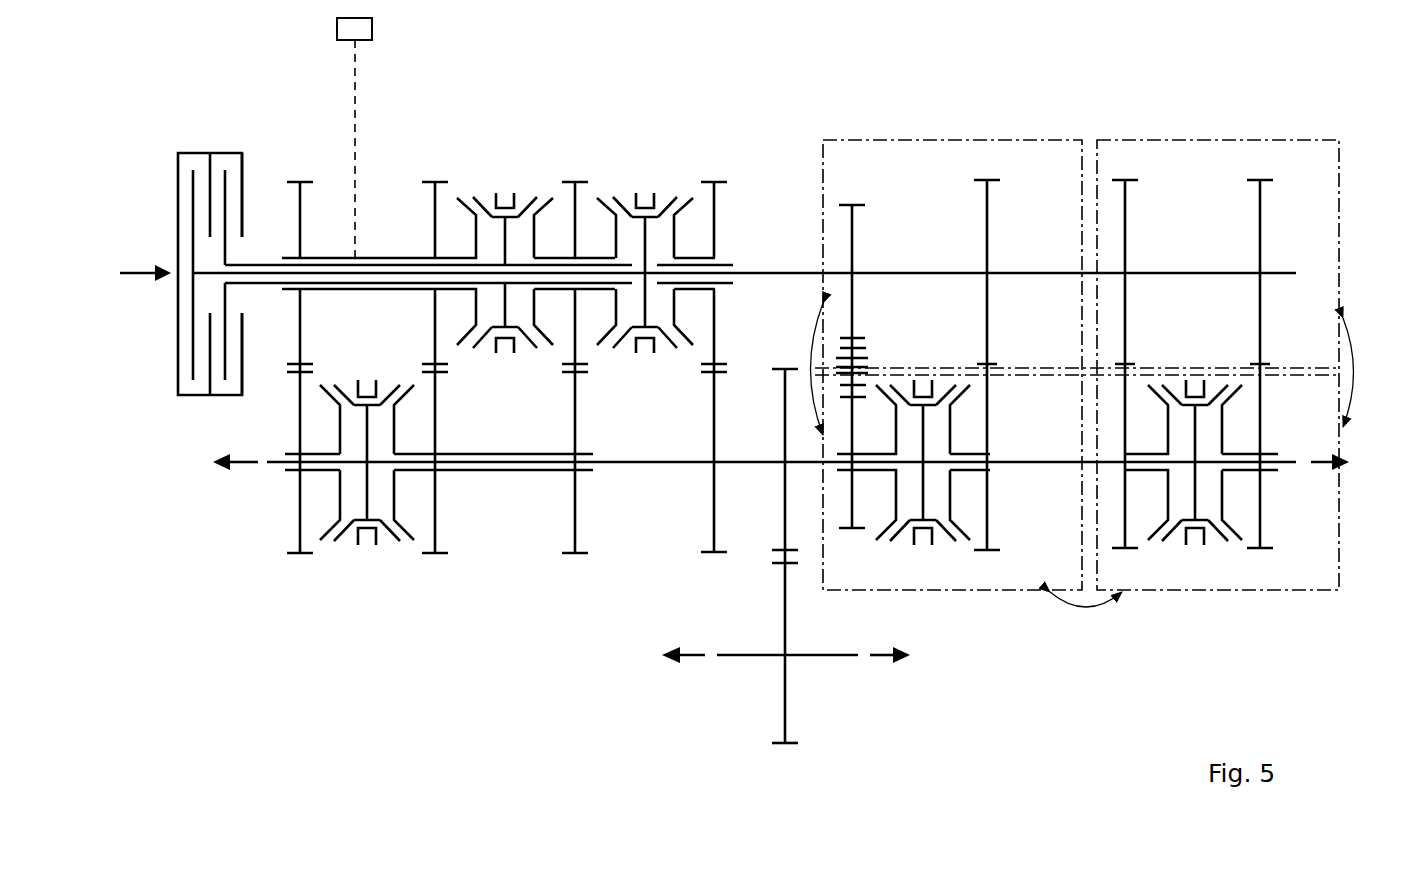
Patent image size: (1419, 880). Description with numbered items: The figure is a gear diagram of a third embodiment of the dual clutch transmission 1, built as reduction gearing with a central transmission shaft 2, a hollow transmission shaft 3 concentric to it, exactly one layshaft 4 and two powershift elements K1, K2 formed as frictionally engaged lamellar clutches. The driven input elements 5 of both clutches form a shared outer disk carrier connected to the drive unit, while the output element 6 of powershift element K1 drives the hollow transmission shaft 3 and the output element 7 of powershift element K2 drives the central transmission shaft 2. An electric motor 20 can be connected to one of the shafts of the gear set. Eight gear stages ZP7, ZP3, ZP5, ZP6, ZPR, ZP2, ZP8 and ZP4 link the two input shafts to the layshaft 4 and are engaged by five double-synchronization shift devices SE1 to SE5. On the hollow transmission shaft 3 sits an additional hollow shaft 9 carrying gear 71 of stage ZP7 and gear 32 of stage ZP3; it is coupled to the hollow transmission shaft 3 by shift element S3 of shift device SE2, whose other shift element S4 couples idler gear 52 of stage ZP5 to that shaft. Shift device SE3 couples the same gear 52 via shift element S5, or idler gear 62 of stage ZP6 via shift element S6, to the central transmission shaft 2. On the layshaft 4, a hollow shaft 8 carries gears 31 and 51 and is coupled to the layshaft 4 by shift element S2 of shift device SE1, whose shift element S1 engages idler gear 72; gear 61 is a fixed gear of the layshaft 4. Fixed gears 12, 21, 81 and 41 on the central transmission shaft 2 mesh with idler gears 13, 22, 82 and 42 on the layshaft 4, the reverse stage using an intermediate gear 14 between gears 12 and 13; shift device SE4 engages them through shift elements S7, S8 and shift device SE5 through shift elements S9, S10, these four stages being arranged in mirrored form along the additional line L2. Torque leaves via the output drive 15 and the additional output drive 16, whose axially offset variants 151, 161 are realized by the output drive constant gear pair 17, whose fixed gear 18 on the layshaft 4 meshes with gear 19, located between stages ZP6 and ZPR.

The dual clutch transmission 1 is at (160, 140).
The input elements of the powershift elements 5 is at (210, 152).
The output element of the powershift element K1 6 is at (225, 168).
The output element of the powershift element K2 7 is at (193, 168).
The powershift element K1 is at (237, 398).
The powershift element K2 is at (178, 400).
The hollow transmission shaft 3 is at (335, 265).
The additional hollow shaft 9 is at (383, 273).
The central transmission shaft 2 is at (915, 272).
The electric motor 20 is at (372, 30).
The gear stage ZP7 is at (300, 180).
The gear of the gear stage ZP7 71 is at (300, 220).
The additional gear of the gear stage ZP7 72 is at (297, 545).
The gear stage ZP3 is at (435, 180).
The additional gear of the gear stage ZP3 32 is at (433, 228).
The gear of the gear stage ZP3 31 is at (437, 520).
The gear stage ZP5 is at (575, 180).
The second gear of the gear stage ZP5 52 is at (577, 220).
The gear of the gear stage ZP5 51 is at (575, 520).
The gear stage ZP6 is at (712, 180).
The additional gear of the gear stage ZP6 62 is at (714, 220).
The gear of the gear stage ZP6 61 is at (713, 522).
The shift device SE2 is at (505, 185).
The shift element S3 is at (468, 200).
The shift element S4 is at (540, 200).
The shift device SE3 is at (645, 185).
The shift element S5 is at (613, 345).
The shift element S6 is at (680, 345).
The additional output drive 16 is at (240, 470).
The layshaft 4 is at (626, 462).
The hollow shaft 8 is at (512, 470).
The output drive 15 is at (1325, 467).
The shift device SE1 is at (367, 550).
The shift element S1 is at (333, 540).
The shift element S2 is at (400, 540).
The gear of the output drive constant gear pair 18 is at (785, 380).
The output drive constant gear pair 17 is at (767, 572).
The gear of the output drive constant gear pair 19 is at (780, 720).
The axially offset variant of the additional output drive 161 is at (700, 665).
The axially offset variant of the output drive 151 is at (880, 665).
The gear stage ZPR is at (852, 203).
The gear of the gear stage ZPR 12 is at (850, 232).
The intermediate gear 14 is at (860, 345).
The gear of the gear stage ZPR 13 is at (840, 530).
The gear stage ZP2 is at (987, 178).
The gear of the gear stage ZP2 21 is at (990, 200).
The gear of the gear stage ZP2 22 is at (995, 560).
The shift device SE4 is at (925, 545).
The shift element S7 is at (888, 540).
The shift element S8 is at (960, 540).
The gear stage ZP8 is at (1125, 178).
The gear of the gear stage ZP8 81 is at (1127, 228).
The gear of the gear stage ZP8 82 is at (1130, 555).
The gear stage ZP4 is at (1260, 178).
The gear of the gear stage ZP4 41 is at (1262, 228).
The gear of the gear stage ZP4 42 is at (1265, 555).
The shift device SE5 is at (1195, 362).
The shift element S9 is at (1160, 542).
The shift element S10 is at (1230, 542).
The additional line L2 is at (1343, 318).